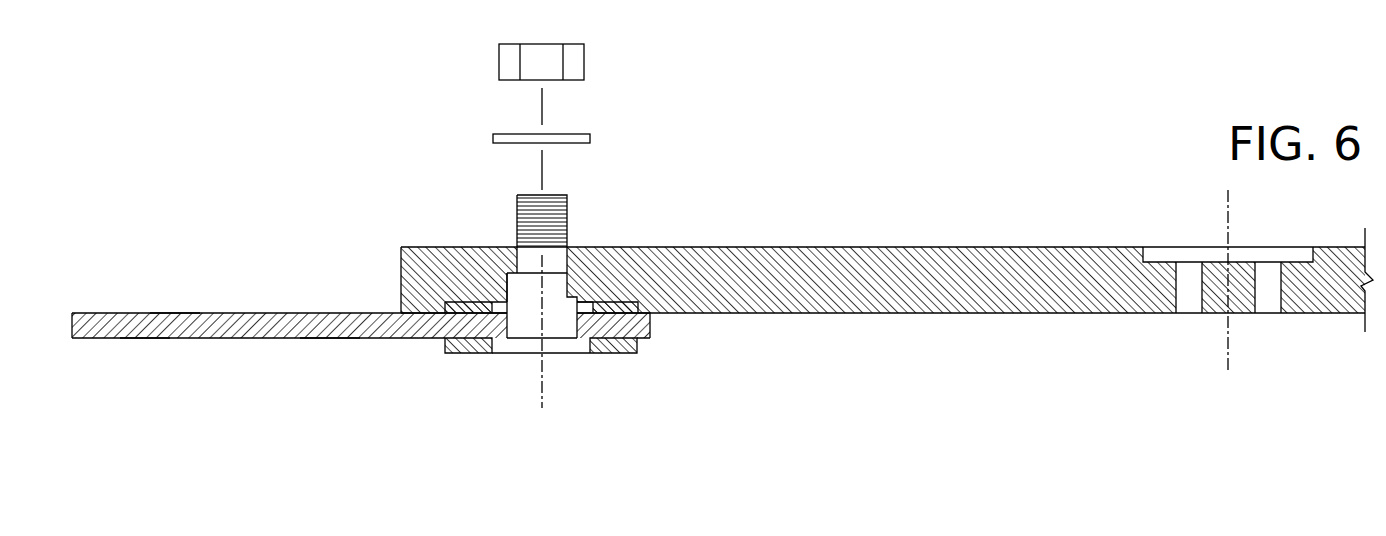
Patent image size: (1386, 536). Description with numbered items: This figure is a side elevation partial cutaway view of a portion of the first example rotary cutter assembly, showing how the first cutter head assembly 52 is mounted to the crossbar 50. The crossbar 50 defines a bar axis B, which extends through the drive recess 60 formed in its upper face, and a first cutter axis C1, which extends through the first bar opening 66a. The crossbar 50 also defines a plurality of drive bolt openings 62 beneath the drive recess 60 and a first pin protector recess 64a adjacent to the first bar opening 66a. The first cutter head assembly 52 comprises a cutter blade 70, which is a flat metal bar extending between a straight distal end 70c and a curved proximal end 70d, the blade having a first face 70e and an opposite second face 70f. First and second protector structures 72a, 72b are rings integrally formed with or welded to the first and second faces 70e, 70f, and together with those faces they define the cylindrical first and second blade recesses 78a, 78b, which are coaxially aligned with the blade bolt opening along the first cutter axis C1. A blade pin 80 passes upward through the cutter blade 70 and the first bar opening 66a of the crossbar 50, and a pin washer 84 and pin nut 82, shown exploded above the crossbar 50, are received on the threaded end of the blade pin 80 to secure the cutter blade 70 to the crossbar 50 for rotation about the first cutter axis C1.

The crossbar 50 is at (892, 272).
The first cutter head assembly 52 is at (331, 359).
The drive recess 60 is at (1265, 256).
The drive bolt openings 62 is at (1186, 302).
The first pin protector recess 64a is at (584, 305).
The first bar opening 66a is at (505, 283).
The cutter blade 70 is at (270, 327).
The straight distal end 70c is at (72, 325).
The curved proximal end 70d is at (651, 325).
The first face 70e is at (176, 313).
The second face 70f is at (145, 339).
The first protector structure 72a is at (624, 308).
The second protector structure 72b is at (628, 357).
The first blade recess 78a is at (506, 285).
The second blade recess 78b is at (492, 355).
The blade pin 80 is at (512, 347).
The pin nut 82 is at (503, 62).
The pin washer 84 is at (492, 138).
The bar axis B is at (1226, 214).
The first cutter axis C1 is at (545, 380).